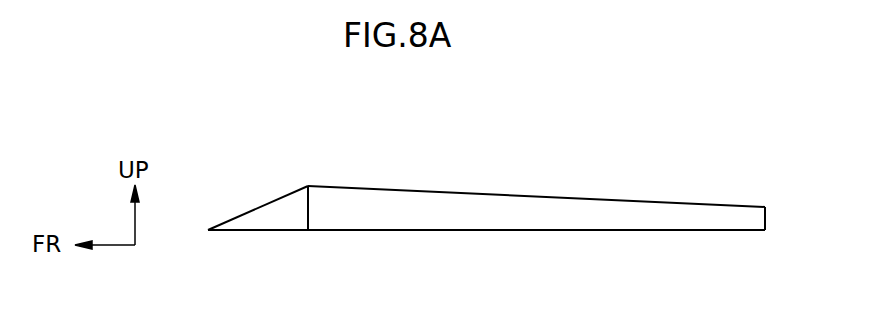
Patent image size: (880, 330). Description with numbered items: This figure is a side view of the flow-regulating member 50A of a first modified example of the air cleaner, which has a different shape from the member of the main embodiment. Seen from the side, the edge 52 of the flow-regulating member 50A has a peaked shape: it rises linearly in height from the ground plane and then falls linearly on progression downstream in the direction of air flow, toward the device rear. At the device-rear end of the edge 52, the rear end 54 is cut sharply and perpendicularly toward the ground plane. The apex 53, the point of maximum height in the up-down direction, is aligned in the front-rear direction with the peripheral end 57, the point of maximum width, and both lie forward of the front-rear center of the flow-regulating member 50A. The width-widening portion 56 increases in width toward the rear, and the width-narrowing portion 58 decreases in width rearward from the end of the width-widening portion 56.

The flow-regulating member 50A is at (650, 153).
The edge 52 is at (378, 190).
The apex 53 is at (308, 185).
The rear end 54 is at (767, 227).
The width-widening portion 56 is at (253, 231).
The peripheral end 57 is at (308, 231).
The width-narrowing portion 58 is at (422, 231).